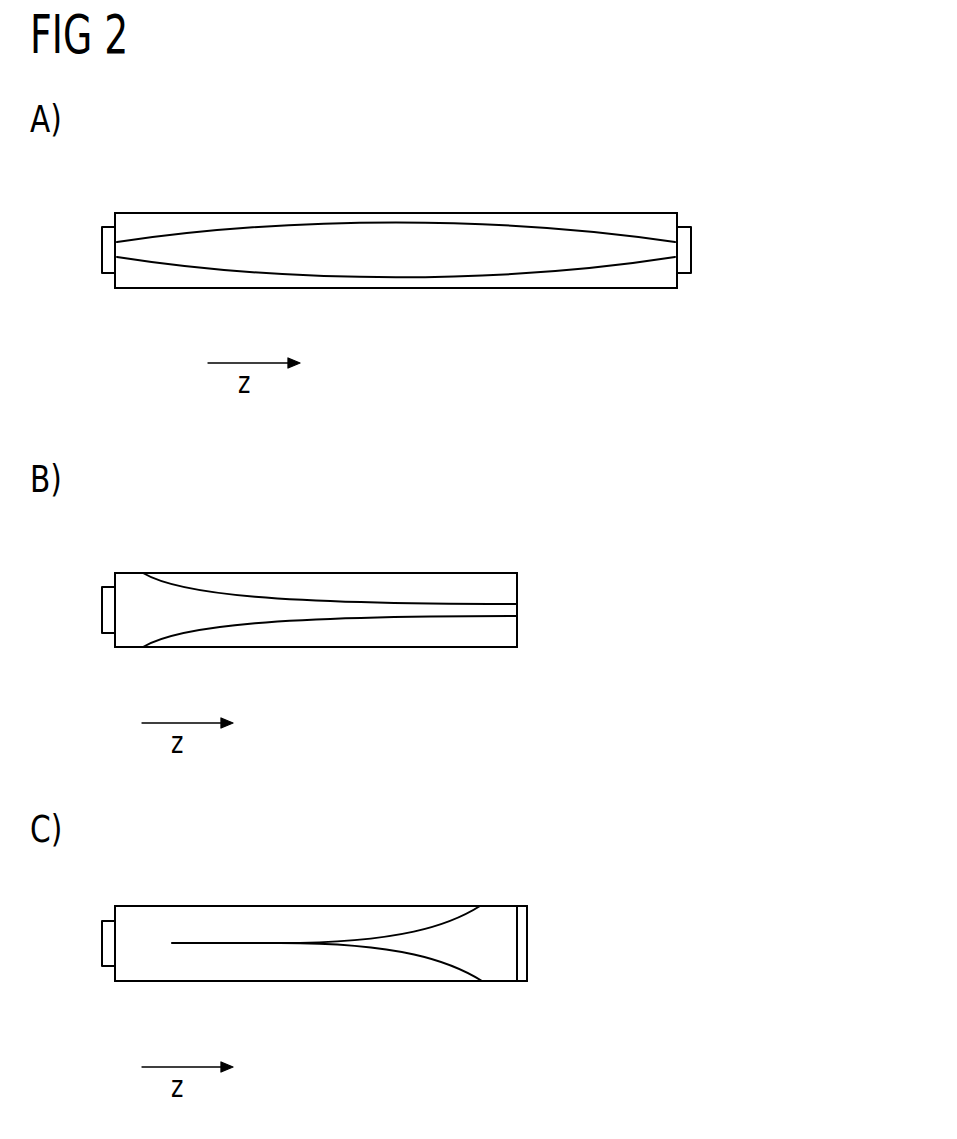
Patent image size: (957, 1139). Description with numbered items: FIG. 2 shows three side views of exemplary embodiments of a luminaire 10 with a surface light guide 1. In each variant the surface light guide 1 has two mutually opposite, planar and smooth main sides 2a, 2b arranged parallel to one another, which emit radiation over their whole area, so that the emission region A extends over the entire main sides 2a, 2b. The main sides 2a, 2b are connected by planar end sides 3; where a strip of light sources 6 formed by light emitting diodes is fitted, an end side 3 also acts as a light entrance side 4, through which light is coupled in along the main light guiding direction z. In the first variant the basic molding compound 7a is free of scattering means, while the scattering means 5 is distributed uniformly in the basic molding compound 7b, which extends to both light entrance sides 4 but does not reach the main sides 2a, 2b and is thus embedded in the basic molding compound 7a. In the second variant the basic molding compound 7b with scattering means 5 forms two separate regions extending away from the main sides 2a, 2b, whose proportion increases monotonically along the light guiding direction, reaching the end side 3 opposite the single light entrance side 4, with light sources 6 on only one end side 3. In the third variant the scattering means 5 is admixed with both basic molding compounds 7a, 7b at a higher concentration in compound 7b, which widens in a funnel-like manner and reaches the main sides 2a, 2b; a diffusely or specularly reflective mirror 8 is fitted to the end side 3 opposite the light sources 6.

The surface light guide 1 is at (470, 204).
The luminaire 10 is at (757, 166).
The main side 2a is at (658, 210).
The main side 2b is at (637, 290).
The emission region A is at (415, 595).
The end side 3 is at (115, 287).
The light entrance side 4 is at (396, 616).
The scattering means 5 is at (390, 597).
The light source 6 is at (108, 248).
The basic molding compound 7a is at (173, 222).
The basic molding compound 7b is at (342, 235).
The mirror 8 is at (526, 938).